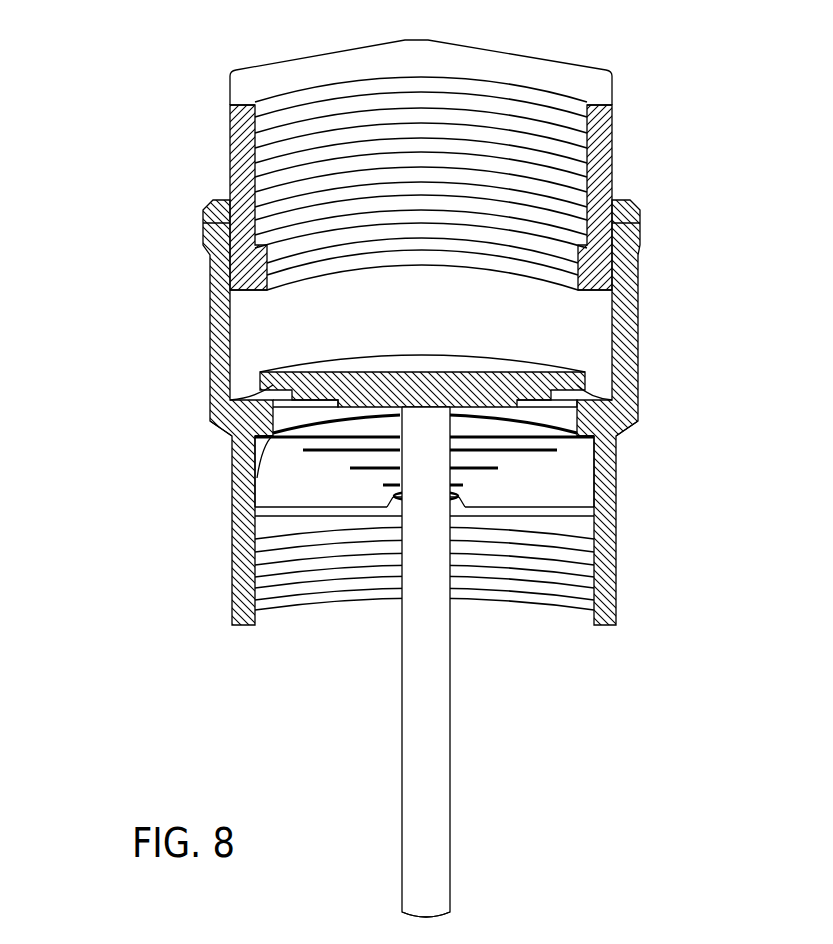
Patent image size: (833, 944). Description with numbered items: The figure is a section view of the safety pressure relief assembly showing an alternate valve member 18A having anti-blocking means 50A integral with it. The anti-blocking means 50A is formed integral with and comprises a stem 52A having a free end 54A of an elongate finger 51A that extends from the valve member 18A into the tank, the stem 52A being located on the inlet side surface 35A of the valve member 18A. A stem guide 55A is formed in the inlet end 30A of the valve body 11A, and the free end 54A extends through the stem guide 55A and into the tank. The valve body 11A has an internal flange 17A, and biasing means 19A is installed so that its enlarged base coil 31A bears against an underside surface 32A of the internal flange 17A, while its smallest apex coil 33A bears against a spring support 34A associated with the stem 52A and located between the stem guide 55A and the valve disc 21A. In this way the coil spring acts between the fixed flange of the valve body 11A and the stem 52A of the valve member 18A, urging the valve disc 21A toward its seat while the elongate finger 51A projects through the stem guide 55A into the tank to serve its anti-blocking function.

The valve body 11A is at (627, 348).
The internal flange 17A is at (583, 410).
The valve member 18A is at (277, 333).
The biasing means 19A is at (452, 495).
The valve disc 21A is at (455, 358).
The inlet end 30A is at (533, 568).
The enlarged base coil 31A is at (290, 438).
The underside surface 32A is at (257, 482).
The smallest apex coil 33A is at (453, 438).
The spring support 34A is at (460, 497).
The inlet side surface 35A is at (263, 403).
The anti-blocking means 50A is at (439, 662).
The elongate finger 51A is at (427, 685).
The stem 52A is at (427, 418).
The free end 54A is at (422, 917).
The stem guide 55A is at (397, 508).